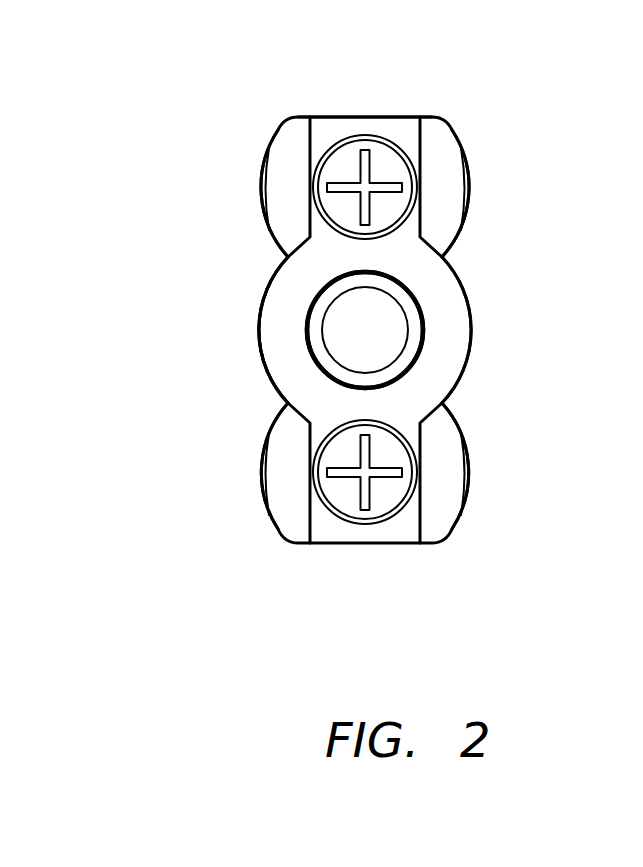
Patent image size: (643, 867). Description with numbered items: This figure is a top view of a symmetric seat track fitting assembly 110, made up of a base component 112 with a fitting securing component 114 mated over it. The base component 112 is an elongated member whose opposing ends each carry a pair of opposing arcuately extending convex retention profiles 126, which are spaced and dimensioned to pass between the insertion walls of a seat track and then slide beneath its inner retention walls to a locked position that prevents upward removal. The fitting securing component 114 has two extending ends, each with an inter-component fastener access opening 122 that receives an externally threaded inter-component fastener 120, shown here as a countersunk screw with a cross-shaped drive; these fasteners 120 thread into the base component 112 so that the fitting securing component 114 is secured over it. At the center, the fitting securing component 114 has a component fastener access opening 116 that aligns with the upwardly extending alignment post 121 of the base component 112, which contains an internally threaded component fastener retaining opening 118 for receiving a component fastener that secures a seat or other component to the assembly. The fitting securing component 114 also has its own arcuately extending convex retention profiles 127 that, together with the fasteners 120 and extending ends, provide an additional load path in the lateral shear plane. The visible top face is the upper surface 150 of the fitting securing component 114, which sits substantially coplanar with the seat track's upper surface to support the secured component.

The symmetric seat track fitting assembly 110 is at (530, 110).
The base component 112 is at (430, 117).
The fitting securing component 114 is at (388, 117).
The component fastener access opening 116 is at (420, 315).
The component fastener retaining opening 118 is at (362, 315).
The inter-component fastener 120 is at (347, 160).
The alignment post 121 is at (418, 353).
The inter-component fastener access opening 122 is at (322, 153).
The arcuately extending convex retention profile 126 is at (262, 182).
The arcuately extending convex retention profile 127 is at (470, 338).
The upper surface 150 is at (278, 295).